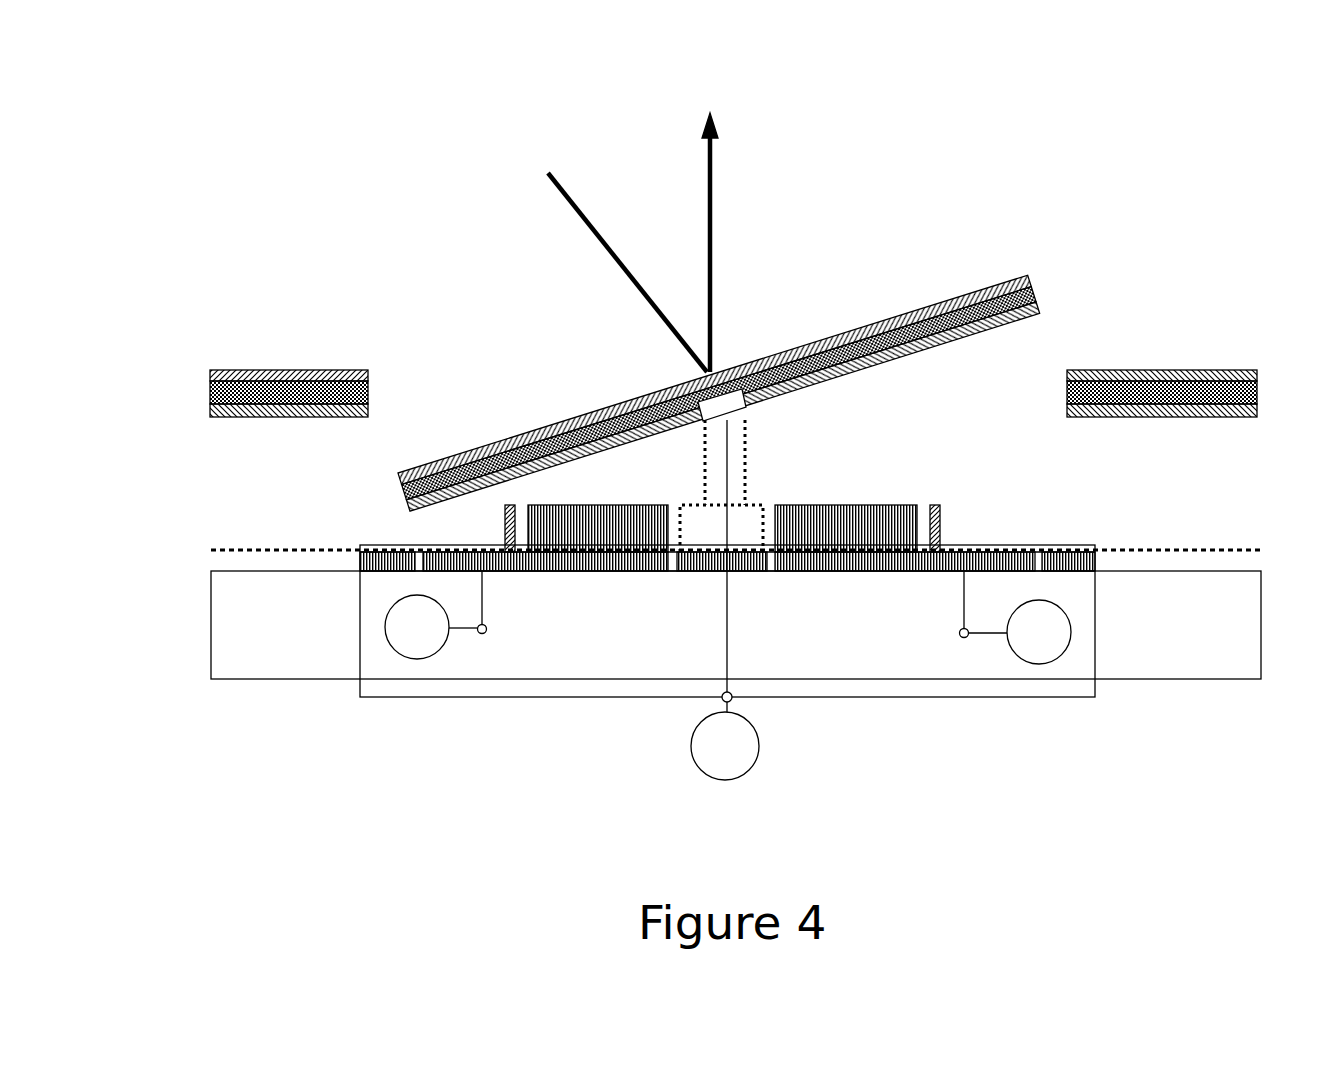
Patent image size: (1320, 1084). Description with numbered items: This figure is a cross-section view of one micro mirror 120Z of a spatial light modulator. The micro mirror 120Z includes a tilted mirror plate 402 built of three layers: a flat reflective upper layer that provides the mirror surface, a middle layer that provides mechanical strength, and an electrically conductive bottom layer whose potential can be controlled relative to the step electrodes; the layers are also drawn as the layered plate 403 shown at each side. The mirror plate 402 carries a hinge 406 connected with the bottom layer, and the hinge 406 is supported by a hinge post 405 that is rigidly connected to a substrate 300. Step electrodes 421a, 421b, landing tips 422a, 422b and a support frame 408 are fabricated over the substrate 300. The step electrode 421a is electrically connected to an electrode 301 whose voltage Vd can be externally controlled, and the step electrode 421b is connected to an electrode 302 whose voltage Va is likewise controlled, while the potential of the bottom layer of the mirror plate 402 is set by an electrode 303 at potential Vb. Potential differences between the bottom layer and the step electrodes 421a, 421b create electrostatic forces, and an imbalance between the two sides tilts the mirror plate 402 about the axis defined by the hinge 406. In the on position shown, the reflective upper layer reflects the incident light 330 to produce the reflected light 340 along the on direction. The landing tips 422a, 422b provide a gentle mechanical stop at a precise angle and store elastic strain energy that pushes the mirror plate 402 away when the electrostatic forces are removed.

The micro mirror 120Z is at (1052, 133).
The substrate 300 is at (306, 663).
The electrode 301 is at (492, 633).
The electrode 302 is at (955, 635).
The electrode 303 is at (744, 706).
The incident light 330 is at (563, 199).
The reflected light 340 is at (720, 160).
The mirror plate 402 is at (697, 386).
The mirror plate layer 403 is at (240, 420).
The hinge post 405 is at (753, 477).
The hinge 406 is at (750, 412).
The support frame 408 is at (352, 552).
The step electrode 421a is at (638, 573).
The step electrode 421b is at (803, 573).
The landing tip 422a is at (495, 527).
The landing tip 422b is at (952, 527).